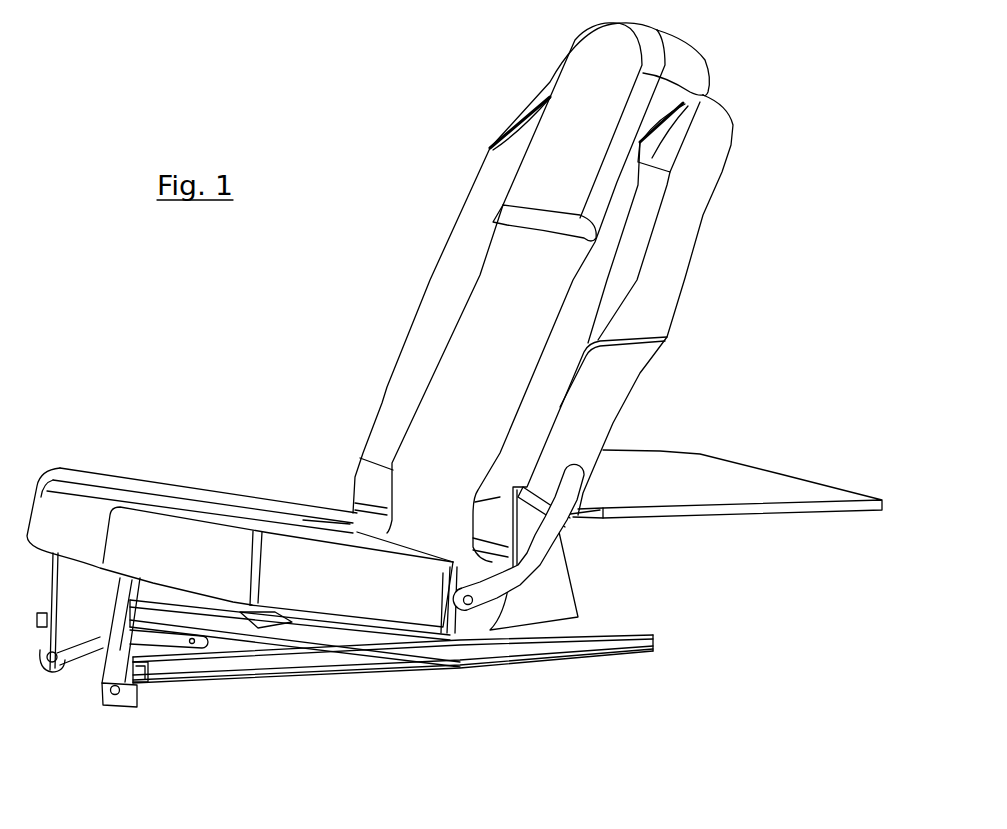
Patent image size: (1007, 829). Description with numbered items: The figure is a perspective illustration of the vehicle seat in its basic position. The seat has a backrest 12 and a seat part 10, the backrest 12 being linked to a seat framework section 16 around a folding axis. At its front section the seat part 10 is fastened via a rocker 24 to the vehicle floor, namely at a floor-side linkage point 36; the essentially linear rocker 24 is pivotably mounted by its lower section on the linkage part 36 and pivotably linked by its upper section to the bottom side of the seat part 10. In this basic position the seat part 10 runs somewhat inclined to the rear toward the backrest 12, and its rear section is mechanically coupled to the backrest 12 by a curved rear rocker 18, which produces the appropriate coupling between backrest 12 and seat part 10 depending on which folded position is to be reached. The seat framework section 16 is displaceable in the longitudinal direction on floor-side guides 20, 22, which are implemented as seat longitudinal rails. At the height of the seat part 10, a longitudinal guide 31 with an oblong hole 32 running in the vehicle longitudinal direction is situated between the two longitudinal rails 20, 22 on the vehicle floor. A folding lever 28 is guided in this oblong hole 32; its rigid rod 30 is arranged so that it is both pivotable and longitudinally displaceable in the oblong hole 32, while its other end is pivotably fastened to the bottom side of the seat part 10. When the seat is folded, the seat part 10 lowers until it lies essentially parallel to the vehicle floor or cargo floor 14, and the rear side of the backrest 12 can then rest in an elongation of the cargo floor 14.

The seat part 10 is at (112, 497).
The backrest 12 is at (665, 263).
The cargo floor 14 is at (692, 467).
The seat framework section 16 is at (563, 578).
The rear rocker 18 is at (552, 520).
The floor-side guide (seat longitudinal rail) 20 is at (642, 638).
The floor-side guide (seat longitudinal rail) 22 is at (210, 615).
The rocker 24 is at (110, 657).
The folding lever 28 is at (303, 641).
The rod 30 is at (248, 630).
The longitudinal guide 31 is at (157, 637).
The oblong hole 32 is at (175, 643).
The floor-side linkage point (linkage part) 36 is at (127, 700).